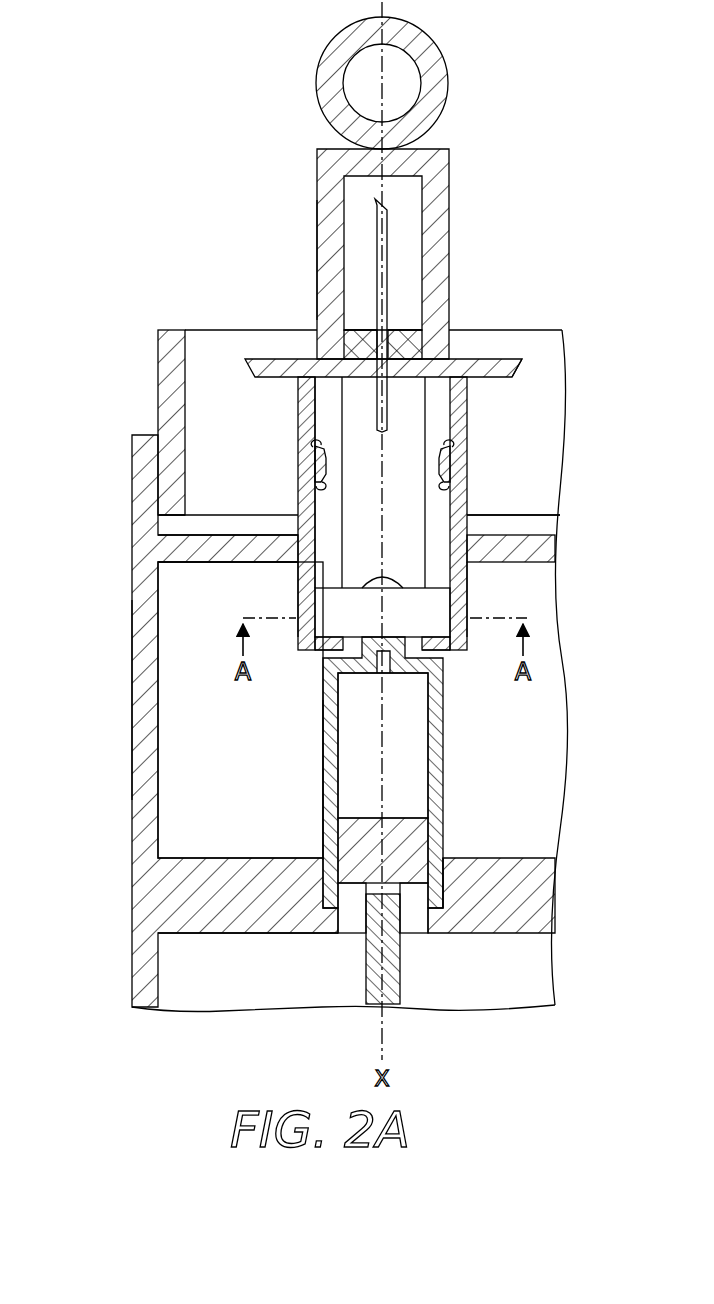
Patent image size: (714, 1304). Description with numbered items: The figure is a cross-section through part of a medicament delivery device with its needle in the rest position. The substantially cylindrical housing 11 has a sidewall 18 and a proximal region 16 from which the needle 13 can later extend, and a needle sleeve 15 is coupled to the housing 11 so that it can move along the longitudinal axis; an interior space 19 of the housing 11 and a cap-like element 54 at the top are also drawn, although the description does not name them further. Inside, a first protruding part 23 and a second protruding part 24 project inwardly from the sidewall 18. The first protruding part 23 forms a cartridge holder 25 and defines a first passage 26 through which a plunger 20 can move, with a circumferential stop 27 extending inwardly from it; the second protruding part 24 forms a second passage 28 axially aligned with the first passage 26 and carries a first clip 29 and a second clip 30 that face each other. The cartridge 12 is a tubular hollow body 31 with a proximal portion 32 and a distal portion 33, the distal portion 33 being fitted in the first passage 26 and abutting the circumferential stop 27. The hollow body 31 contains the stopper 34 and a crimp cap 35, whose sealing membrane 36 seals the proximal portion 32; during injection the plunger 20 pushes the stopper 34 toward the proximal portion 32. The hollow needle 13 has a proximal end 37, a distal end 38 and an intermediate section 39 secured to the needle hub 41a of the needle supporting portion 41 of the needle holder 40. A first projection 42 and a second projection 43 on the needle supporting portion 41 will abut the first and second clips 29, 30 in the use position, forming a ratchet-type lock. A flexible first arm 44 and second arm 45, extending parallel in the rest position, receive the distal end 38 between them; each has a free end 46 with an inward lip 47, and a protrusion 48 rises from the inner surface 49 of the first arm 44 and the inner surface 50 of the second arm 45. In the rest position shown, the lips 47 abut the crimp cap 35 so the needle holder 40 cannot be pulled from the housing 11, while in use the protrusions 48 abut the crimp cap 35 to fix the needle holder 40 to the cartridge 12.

The housing 11 is at (132, 572).
The cartridge 12 is at (336, 777).
The needle 13 is at (378, 255).
The needle sleeve 15 is at (158, 380).
The proximal region 16 is at (103, 970).
The sidewall 18 is at (132, 695).
The chamber 19 is at (174, 787).
The plunger 20 is at (366, 991).
The first protruding part 23 is at (244, 926).
The second protruding part 24 is at (190, 551).
The cartridge holder 25 is at (188, 926).
The first passage 26 is at (420, 926).
The circumferential stop 27 is at (332, 926).
The second passage 28 is at (274, 540).
The first clip 29 is at (230, 540).
The second clip 30 is at (525, 548).
The hollow body 31 is at (430, 793).
The proximal portion 32 is at (410, 700).
The distal portion 33 is at (440, 876).
The stopper 34 is at (404, 817).
The crimp cap 35 is at (440, 600).
The sealing membrane 36 is at (388, 580).
The proximal end 37 is at (383, 210).
The distal end 38 is at (388, 428).
The intermediate section 39 is at (388, 330).
The needle holder 40 is at (290, 415).
The needle supporting portion 41 is at (310, 352).
The needle hub 41a is at (410, 340).
The first projection 42 is at (250, 363).
The second projection 43 is at (520, 365).
The first arm 44 is at (298, 600).
The second arm 45 is at (462, 575).
The free end 46 is at (300, 648).
The lip 47 is at (317, 652).
The protrusion 48 is at (312, 453).
The inner surface 49 is at (312, 567).
The inner surface 50 is at (447, 520).
The cap 54 is at (451, 168).